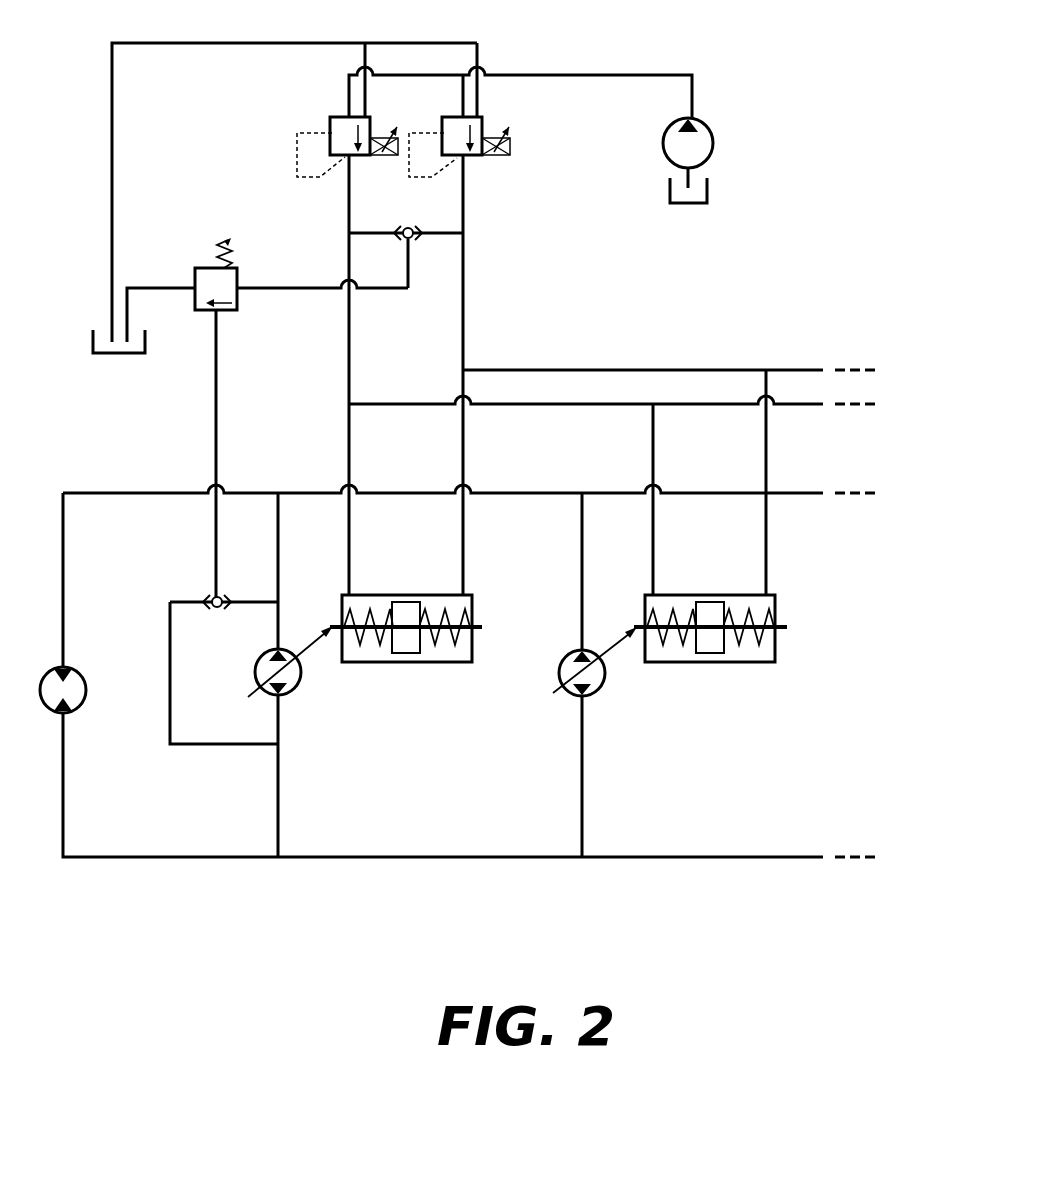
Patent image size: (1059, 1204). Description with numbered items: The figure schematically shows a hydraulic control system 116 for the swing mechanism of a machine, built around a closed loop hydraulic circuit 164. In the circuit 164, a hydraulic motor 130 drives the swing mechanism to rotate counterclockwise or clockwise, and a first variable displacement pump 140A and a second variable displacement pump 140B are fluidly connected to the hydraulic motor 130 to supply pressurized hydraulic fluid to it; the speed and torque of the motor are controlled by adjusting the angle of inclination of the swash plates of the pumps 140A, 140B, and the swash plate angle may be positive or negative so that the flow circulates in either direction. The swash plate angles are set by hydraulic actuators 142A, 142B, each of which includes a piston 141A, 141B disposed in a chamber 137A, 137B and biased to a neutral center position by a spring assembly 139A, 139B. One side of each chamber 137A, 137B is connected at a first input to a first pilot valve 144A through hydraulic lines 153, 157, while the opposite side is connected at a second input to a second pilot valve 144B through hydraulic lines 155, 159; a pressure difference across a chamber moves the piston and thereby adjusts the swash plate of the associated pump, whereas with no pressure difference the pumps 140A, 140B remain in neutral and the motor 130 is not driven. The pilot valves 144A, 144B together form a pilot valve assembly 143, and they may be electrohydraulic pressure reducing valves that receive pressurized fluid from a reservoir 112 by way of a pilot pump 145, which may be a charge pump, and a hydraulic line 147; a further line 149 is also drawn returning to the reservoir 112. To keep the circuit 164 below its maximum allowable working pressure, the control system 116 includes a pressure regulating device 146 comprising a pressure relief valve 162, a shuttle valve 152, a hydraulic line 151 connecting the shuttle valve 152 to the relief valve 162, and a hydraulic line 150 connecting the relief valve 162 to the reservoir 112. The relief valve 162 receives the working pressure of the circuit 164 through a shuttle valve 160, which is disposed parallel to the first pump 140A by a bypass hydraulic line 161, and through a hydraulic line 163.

The reservoir 112 is at (708, 188).
The hydraulic control system 116 is at (748, 246).
The hydraulic motor 130 is at (87, 690).
The chamber 137A is at (437, 605).
The chamber 137B is at (740, 605).
The spring assembly 139A is at (372, 647).
The spring assembly 139B is at (675, 647).
The first variable displacement pump 140A is at (293, 690).
The second variable displacement pump 140B is at (598, 687).
The piston 141A is at (408, 642).
The piston 141B is at (711, 642).
The hydraulic actuator 142A is at (472, 652).
The hydraulic actuator 142B is at (775, 652).
The pilot valve assembly 143 is at (501, 186).
The first pilot valve 144A is at (330, 118).
The second pilot valve 144B is at (483, 123).
The pilot pump 145 is at (713, 142).
The pressure regulating device 146 is at (240, 325).
The hydraulic line 147 is at (553, 74).
The return line 149 is at (114, 113).
The hydraulic line 150 is at (152, 288).
The hydraulic line 151 is at (297, 287).
The shuttle valve 152 is at (415, 240).
The hydraulic line 153 is at (351, 380).
The hydraulic line 155 is at (463, 310).
The hydraulic line 157 is at (593, 407).
The hydraulic line 159 is at (658, 368).
The shuttle valve 160 is at (207, 595).
The bypass hydraulic line 161 is at (215, 747).
The pressure relief valve 162 is at (207, 265).
The hydraulic line 163 is at (218, 452).
The closed loop hydraulic circuit 164 is at (185, 880).